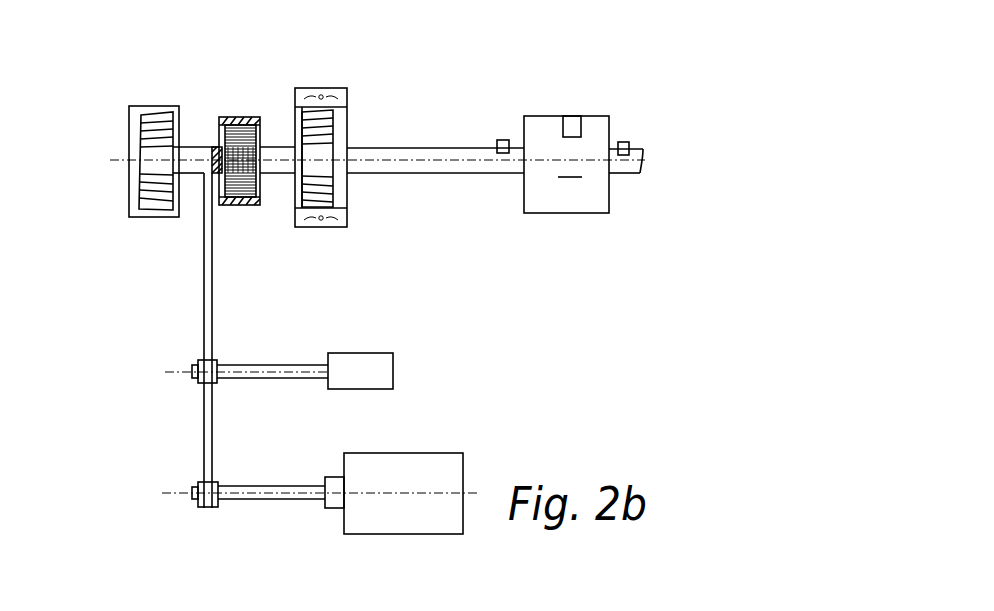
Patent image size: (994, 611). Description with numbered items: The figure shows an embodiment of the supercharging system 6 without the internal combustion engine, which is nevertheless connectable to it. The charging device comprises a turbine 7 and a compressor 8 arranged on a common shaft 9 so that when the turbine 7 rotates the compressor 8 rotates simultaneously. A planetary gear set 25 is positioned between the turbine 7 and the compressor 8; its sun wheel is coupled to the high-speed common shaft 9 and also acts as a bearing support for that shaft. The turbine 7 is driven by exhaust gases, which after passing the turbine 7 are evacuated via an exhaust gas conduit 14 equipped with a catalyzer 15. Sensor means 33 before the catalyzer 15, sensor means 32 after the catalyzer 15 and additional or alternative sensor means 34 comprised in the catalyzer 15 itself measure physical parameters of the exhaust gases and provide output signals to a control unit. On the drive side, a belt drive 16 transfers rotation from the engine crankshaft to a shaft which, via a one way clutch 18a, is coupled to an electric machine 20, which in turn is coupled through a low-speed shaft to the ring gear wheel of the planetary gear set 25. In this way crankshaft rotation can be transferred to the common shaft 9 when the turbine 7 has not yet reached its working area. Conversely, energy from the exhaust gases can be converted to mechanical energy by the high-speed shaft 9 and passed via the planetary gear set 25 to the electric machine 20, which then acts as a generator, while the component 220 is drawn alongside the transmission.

The compressor 8 is at (152, 106).
The common shaft 9 is at (189, 152).
The planetary gear set 25 is at (263, 117).
The turbine 7 is at (338, 190).
The supercharging system 6 is at (380, 88).
The sensor means 33 is at (500, 140).
The catalyzer 15 is at (566, 164).
The sensor means 34 is at (572, 116).
The exhaust gas conduit 14 is at (628, 165).
The sensor means 32 is at (629, 146).
The belt drive 16 is at (204, 292).
The actuator 220 is at (357, 366).
The one way clutch 18a is at (335, 490).
The electric machine 20 is at (400, 465).